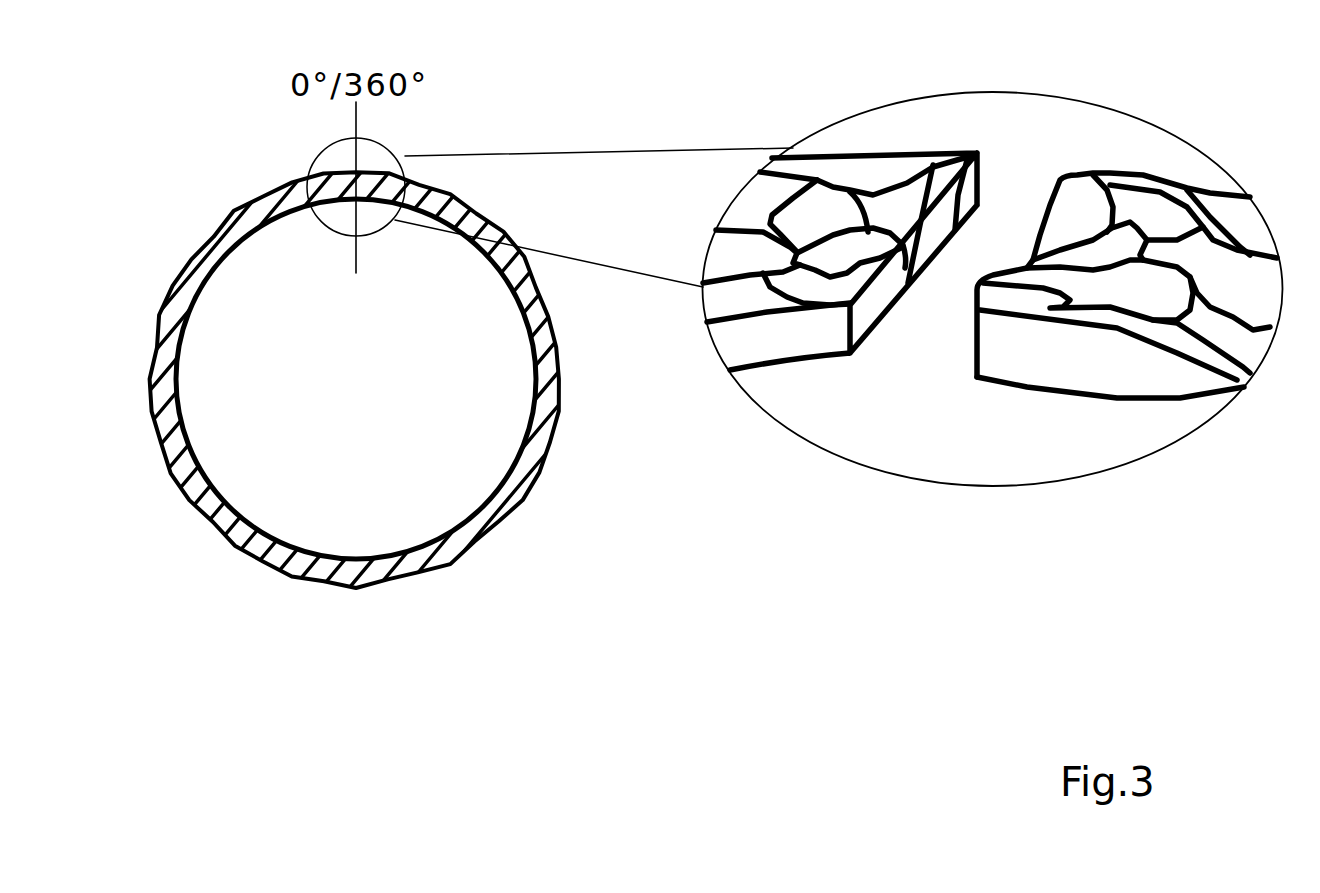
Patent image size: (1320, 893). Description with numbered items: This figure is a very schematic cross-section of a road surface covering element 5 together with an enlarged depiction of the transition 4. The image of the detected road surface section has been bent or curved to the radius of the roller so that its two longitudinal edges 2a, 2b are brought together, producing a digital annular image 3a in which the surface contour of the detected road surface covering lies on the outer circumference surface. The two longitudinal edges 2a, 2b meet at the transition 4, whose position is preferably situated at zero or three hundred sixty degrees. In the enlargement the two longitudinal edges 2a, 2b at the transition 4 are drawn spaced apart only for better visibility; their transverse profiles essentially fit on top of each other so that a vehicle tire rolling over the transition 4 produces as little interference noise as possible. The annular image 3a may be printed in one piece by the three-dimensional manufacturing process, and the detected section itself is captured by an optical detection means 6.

The front longitudinal edge 2a is at (893, 290).
The rear longitudinal edge of the detected section 2b is at (968, 273).
The annular image 3a is at (378, 588).
The transition 4 is at (1027, 157).
The road surface covering element 5 is at (240, 527).
The optical detection means 6 is at (830, 253).